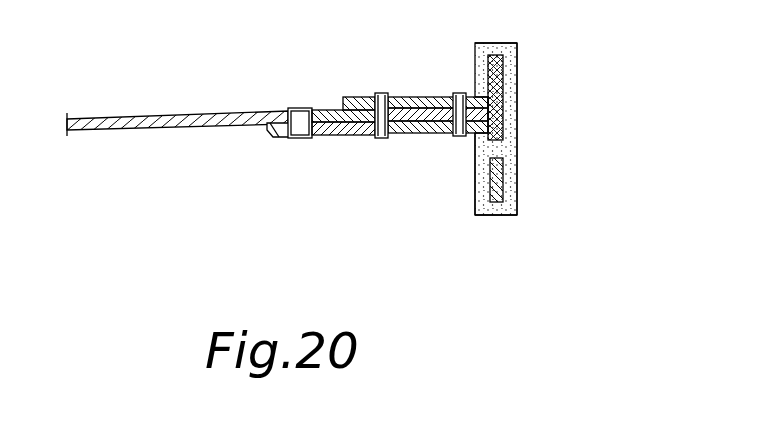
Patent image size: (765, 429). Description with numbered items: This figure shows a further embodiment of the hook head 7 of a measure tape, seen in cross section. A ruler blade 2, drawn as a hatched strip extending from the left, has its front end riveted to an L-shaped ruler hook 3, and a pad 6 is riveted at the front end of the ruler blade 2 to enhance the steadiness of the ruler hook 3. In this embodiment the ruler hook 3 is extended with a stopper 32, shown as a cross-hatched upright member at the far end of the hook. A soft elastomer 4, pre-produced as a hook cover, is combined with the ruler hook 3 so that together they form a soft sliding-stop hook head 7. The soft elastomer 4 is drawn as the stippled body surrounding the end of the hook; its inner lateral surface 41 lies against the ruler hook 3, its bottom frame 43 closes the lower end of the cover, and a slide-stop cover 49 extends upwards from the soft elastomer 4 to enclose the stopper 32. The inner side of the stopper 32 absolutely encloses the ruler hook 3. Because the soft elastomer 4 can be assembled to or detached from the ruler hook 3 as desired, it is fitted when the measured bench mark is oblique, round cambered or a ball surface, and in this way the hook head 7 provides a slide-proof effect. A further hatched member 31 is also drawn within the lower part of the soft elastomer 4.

The ruler blade 2 is at (227, 112).
The ruler hook 3 is at (418, 97).
The soft elastomer 4 is at (498, 136).
The pad 6 is at (338, 138).
The hook head 7 is at (528, 93).
The lower insert 31 is at (503, 158).
The stopper 32 is at (502, 65).
The inner lateral surface 41 is at (475, 170).
The bottom frame 43 is at (493, 217).
The slide-stop cover 49 is at (490, 43).